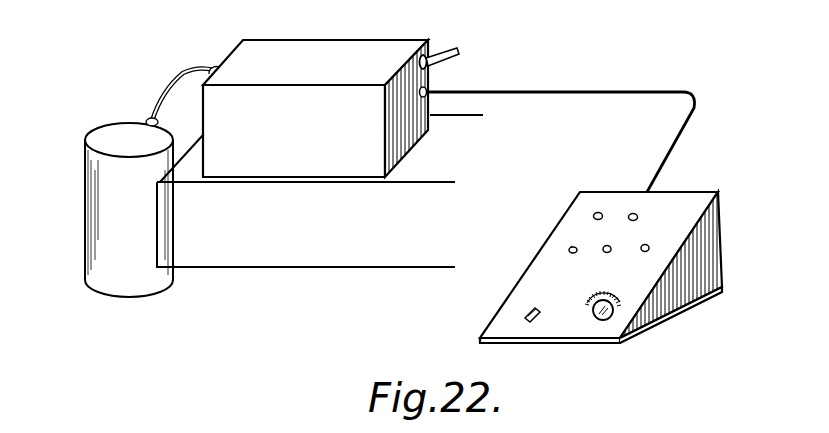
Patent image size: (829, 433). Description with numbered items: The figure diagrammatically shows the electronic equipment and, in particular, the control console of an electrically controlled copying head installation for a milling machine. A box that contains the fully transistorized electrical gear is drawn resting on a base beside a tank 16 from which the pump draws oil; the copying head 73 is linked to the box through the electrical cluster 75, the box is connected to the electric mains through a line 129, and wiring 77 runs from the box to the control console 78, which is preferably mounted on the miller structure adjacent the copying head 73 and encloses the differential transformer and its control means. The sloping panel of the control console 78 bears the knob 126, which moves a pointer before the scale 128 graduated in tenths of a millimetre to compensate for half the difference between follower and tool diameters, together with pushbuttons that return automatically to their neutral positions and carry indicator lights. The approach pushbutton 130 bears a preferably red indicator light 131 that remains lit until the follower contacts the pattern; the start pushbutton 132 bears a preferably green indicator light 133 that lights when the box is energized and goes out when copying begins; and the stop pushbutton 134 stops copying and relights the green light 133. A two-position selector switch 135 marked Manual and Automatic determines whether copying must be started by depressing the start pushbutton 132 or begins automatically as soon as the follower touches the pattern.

The tank 16 is at (318, 48).
The copying head 73 is at (125, 284).
The electrical cluster 75 is at (177, 73).
The wiring 77 is at (616, 92).
The control console 78 is at (585, 200).
The knob 126 is at (607, 320).
The scale 128 is at (640, 321).
The line 129 is at (447, 44).
The approach pushbutton 130 is at (568, 250).
The indicator light 131 is at (599, 212).
The start pushbutton 132 is at (606, 252).
The indicator light 133 is at (636, 213).
The stop pushbutton 134 is at (647, 245).
The selector switch 135 is at (526, 312).